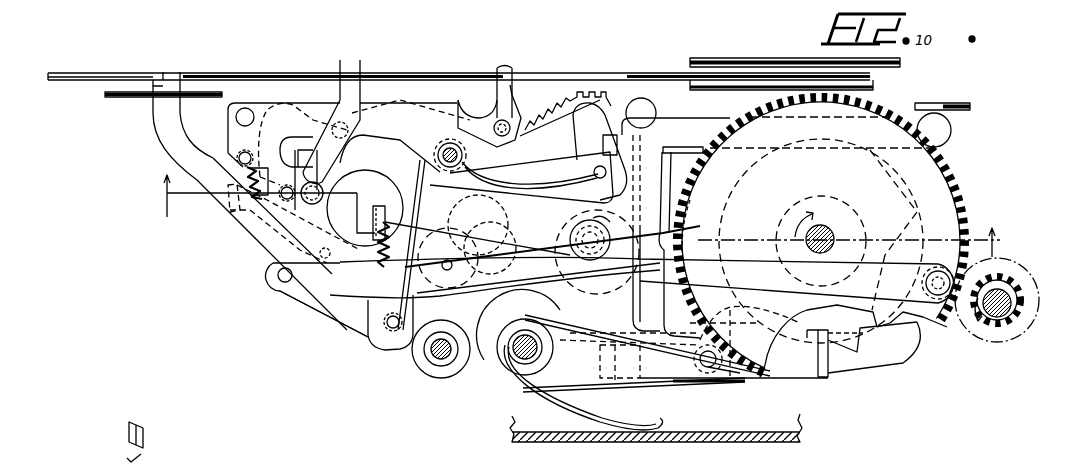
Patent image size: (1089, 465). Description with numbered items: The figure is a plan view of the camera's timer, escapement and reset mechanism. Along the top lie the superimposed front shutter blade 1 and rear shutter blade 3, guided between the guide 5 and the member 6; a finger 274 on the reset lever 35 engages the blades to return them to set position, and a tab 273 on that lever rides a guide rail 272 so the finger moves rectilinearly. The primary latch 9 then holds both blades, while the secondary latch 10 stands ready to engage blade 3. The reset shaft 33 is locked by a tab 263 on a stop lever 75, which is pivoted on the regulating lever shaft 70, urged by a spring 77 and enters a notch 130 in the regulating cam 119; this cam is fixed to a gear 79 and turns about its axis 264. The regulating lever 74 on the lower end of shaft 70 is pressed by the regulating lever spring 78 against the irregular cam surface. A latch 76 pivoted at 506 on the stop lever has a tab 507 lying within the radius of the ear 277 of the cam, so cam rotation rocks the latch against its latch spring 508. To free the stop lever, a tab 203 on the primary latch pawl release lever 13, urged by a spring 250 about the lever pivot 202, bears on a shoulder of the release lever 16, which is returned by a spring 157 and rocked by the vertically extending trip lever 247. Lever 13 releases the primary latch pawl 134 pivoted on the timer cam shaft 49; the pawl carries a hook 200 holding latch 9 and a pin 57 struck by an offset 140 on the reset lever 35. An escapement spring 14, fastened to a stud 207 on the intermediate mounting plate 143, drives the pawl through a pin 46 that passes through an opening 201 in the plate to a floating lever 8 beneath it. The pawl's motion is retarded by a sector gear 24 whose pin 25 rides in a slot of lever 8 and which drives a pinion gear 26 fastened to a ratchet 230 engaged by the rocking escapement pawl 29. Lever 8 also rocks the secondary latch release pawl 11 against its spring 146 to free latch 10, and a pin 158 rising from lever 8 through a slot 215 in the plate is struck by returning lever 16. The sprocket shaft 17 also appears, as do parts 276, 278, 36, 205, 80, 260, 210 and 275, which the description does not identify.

The front shutter blade 1 is at (86, 72).
The rear shutter blade 3 is at (93, 81).
The guide rail 272 is at (125, 98).
The tab 273 is at (156, 84).
The finger 274 is at (174, 72).
The reset lever 35 is at (166, 152).
The guide member 6 is at (733, 60).
The guide 5 is at (703, 92).
The trip lever 247 is at (963, 107).
The release lever 16 is at (950, 137).
The gear 79 is at (957, 187).
The pitch circle 276 is at (740, 180).
The axis 264 is at (817, 232).
The regulating cam 119 is at (910, 197).
The cam track 278 is at (880, 255).
The pinion 36 is at (1023, 285).
The reset shaft 33 is at (992, 317).
The primary latch 9 is at (506, 70).
The primary latch pawl release lever 13 is at (664, 147).
The intermediate mounting plate 143 is at (637, 103).
The sector gear 24 is at (548, 106).
The opening 201 is at (571, 133).
The escapement spring 14 is at (523, 181).
The pin 46 is at (596, 177).
The timer cam shaft 49 is at (441, 148).
The hook 200 is at (460, 108).
The secondary latch 10 is at (345, 71).
The primary latch pawl 134 is at (368, 110).
The secondary latch release pawl 11 is at (267, 142).
The pin 57 is at (313, 187).
The cam disk 205 is at (370, 172).
The block 80 is at (382, 207).
The rocking escapement pawl 29 is at (422, 180).
The spring 146 is at (247, 177).
The slot 215 is at (417, 273).
The ratchet 230 is at (472, 195).
The pinion gear 26 is at (483, 247).
The pin 158 is at (452, 270).
The lever pivot 202 is at (568, 240).
The offset 140 is at (537, 265).
The spring 250 is at (604, 222).
The tab 203 is at (673, 232).
The pin 25 is at (687, 207).
The floating lever 8 is at (527, 293).
The arm 260 is at (640, 302).
The spring 77 is at (570, 327).
The latch spring 508 is at (660, 333).
The regulating lever spring 78 is at (620, 376).
The stop lever 75 is at (592, 372).
The latch 76 is at (702, 380).
The pivot 506 is at (712, 368).
The tab 507 is at (732, 337).
The regulating lever shaft 70 is at (537, 355).
The sprocket shaft 17 is at (442, 350).
The stud 207 is at (393, 337).
The spring 157 is at (372, 317).
The pawl 210 is at (247, 230).
The notch 130 is at (812, 327).
The tab 263 is at (820, 343).
The ear 277 is at (860, 352).
The regulating lever 74 is at (883, 363).
The pivot 275 is at (925, 283).